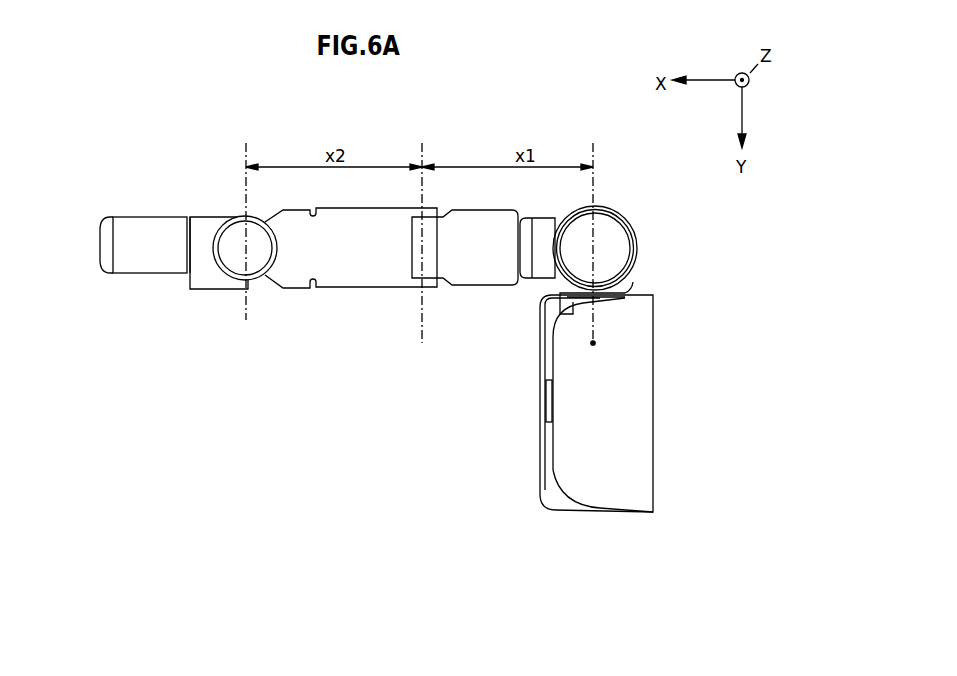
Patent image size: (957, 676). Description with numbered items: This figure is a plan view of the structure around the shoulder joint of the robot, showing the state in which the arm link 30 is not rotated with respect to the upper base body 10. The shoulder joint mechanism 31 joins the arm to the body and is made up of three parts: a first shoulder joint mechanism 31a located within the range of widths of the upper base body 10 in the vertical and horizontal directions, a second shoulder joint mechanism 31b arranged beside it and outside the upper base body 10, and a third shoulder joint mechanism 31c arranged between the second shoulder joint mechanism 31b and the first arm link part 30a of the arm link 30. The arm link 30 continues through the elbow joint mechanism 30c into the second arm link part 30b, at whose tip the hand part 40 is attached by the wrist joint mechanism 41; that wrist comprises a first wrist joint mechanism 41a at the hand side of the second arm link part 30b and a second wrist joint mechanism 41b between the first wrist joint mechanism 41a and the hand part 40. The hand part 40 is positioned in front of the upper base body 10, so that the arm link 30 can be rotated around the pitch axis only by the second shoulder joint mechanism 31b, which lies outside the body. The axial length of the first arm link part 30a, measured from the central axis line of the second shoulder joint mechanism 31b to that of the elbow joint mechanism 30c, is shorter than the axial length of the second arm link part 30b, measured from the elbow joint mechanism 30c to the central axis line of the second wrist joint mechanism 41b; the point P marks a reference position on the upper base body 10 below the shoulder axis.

The upper base body 10 is at (642, 402).
The arm link 30 is at (391, 323).
The first arm link part 30a is at (476, 284).
The second arm link part 30b is at (337, 266).
The elbow joint mechanism 30c is at (432, 280).
The shoulder joint mechanism 31 is at (539, 293).
The first shoulder joint mechanism 31a is at (583, 365).
The second shoulder joint mechanism 31b is at (560, 283).
The third shoulder joint mechanism 31c is at (527, 282).
The hand part 40 is at (148, 215).
The wrist joint mechanism 41 is at (223, 327).
The first wrist joint mechanism 41a is at (264, 284).
The second wrist joint mechanism 41b is at (220, 292).
The reference point P is at (593, 345).